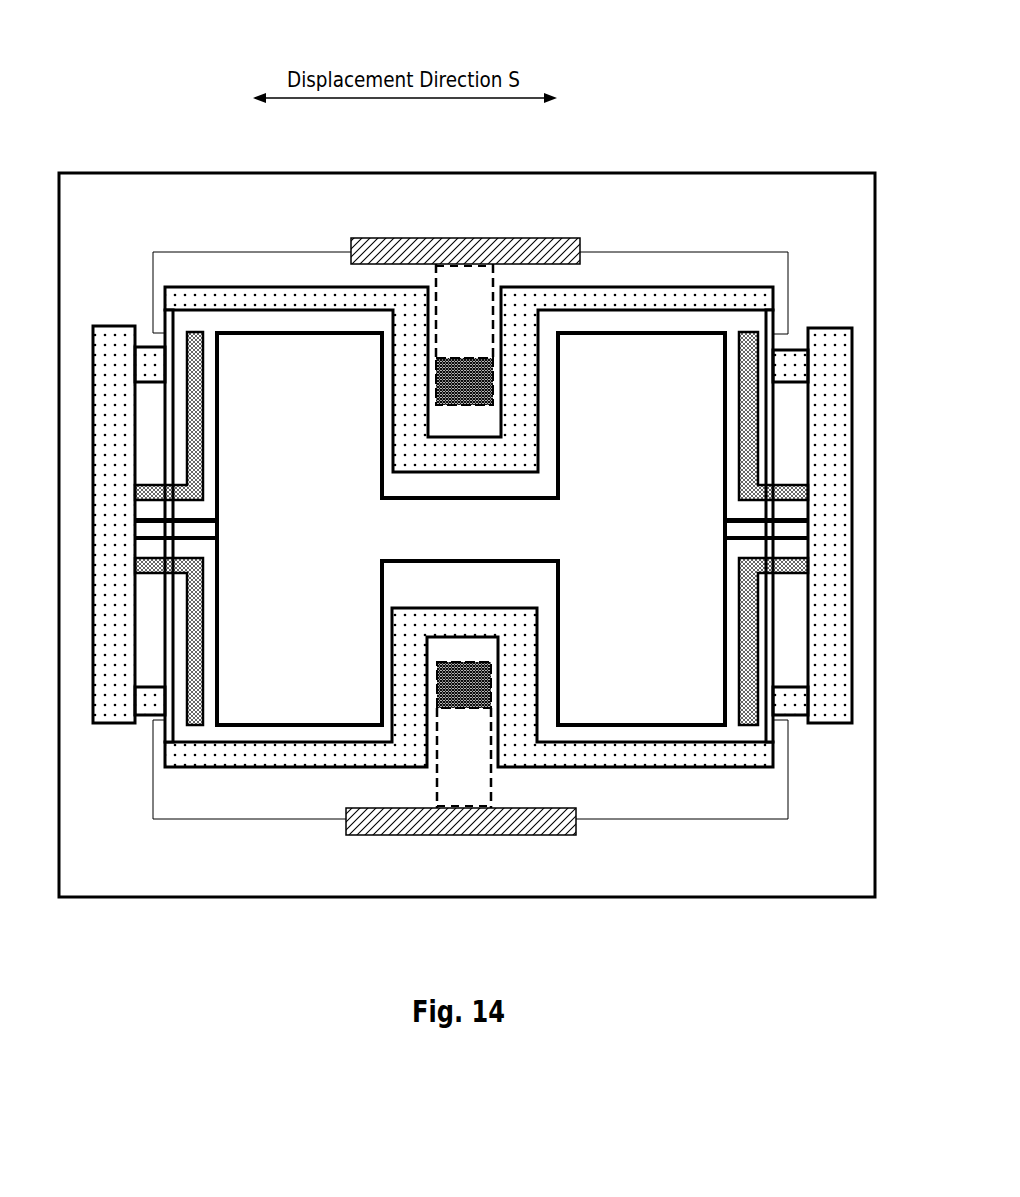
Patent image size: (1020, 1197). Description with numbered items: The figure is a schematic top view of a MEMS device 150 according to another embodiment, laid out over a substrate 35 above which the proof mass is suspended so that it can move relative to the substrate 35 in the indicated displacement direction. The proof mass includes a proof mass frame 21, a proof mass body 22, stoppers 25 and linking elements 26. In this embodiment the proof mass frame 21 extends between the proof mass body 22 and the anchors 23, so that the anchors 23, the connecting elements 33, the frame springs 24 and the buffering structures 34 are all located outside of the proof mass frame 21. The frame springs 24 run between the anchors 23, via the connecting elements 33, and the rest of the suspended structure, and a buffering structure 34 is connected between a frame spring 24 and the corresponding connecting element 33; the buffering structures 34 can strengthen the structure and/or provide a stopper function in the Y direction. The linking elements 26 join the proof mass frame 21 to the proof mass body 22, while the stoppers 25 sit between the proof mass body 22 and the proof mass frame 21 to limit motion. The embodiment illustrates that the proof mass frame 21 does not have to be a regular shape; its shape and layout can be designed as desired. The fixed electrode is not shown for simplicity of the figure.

The MEMS device 150 is at (797, 101).
The proof mass frame 21 is at (130, 326).
The proof mass body 22 is at (607, 536).
The anchor 23 is at (464, 533).
The frame spring 24 is at (311, 252).
The stopper 25 is at (167, 485).
The linking element 26 is at (220, 521).
The connecting element 33 is at (475, 343).
The buffering structure 34 is at (582, 238).
The substrate 35 is at (308, 899).